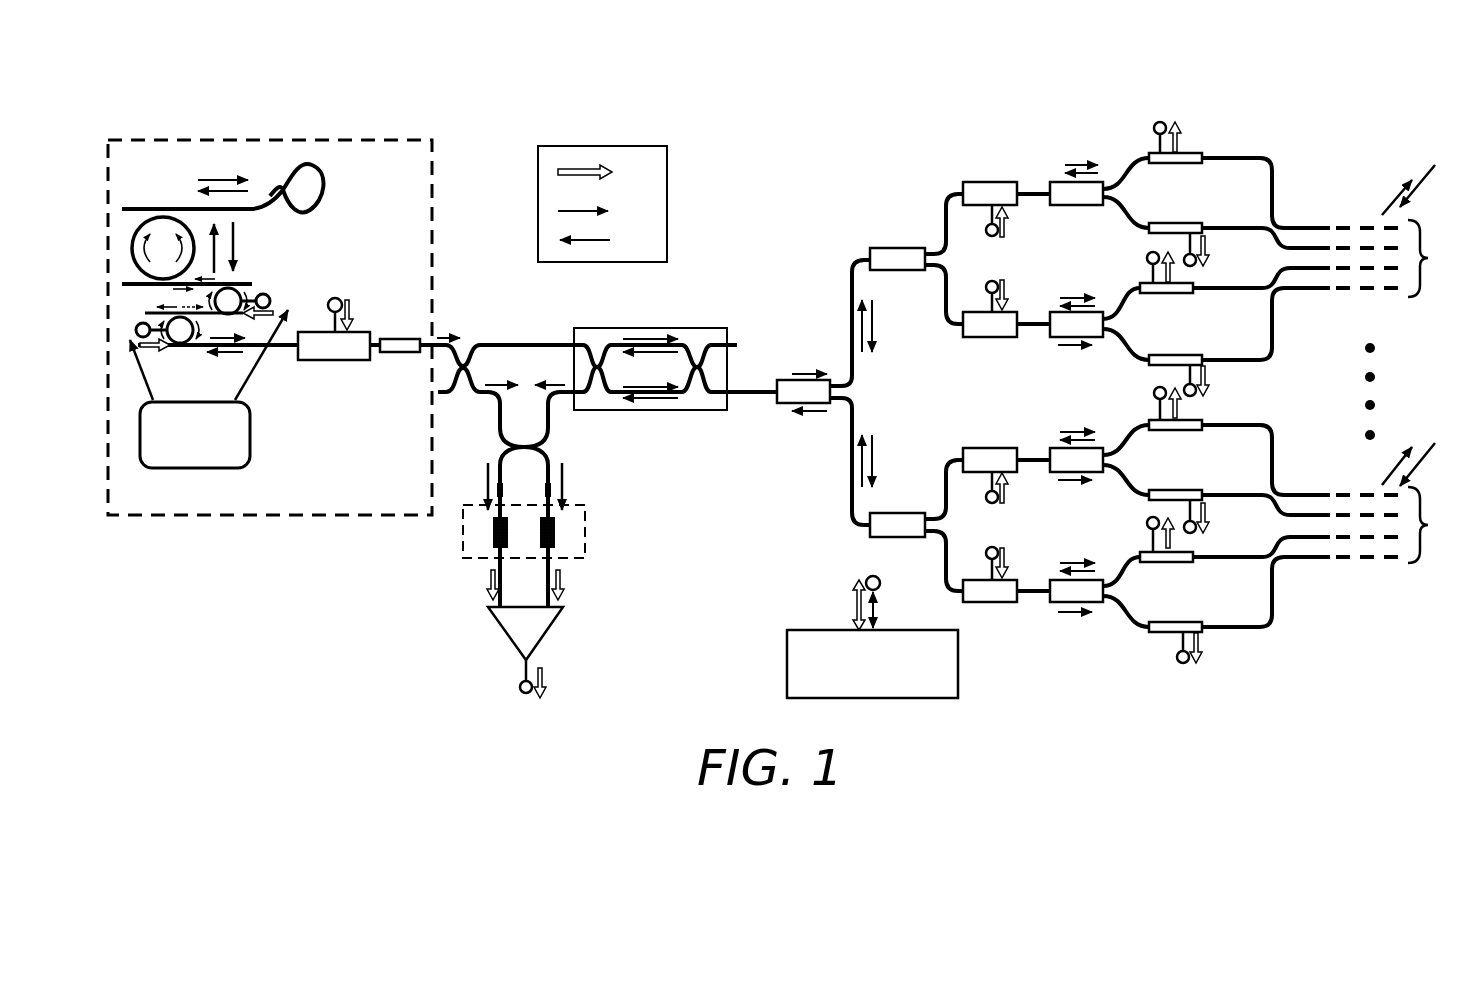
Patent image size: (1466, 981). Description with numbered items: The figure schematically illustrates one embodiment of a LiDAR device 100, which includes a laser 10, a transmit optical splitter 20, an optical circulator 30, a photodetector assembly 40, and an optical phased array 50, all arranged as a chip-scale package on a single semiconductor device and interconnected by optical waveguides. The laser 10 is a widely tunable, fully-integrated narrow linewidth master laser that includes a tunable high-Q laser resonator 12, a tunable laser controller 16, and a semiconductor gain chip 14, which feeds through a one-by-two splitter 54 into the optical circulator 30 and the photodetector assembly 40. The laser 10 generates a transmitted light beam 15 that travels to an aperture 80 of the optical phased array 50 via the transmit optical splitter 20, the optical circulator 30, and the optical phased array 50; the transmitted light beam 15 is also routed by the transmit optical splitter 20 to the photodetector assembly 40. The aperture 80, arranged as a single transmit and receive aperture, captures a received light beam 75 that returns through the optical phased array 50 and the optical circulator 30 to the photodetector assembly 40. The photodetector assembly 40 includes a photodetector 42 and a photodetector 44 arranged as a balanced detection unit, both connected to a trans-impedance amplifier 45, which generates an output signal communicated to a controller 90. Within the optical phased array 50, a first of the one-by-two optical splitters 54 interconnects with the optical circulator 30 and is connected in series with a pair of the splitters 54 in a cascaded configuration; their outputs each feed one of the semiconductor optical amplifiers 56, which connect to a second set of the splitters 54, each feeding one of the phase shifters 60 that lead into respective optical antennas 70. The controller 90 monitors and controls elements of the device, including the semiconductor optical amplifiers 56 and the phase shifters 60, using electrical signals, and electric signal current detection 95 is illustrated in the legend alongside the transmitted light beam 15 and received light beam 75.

The LiDAR device 100 is at (743, 128).
The laser 10 is at (384, 171).
The tunable high-Q laser resonator 12 is at (228, 252).
The semiconductor gain chip 14 is at (338, 360).
The tunable laser controller 16 is at (181, 447).
The transmit optical splitter 20 is at (510, 426).
The optical circulator 30 is at (697, 328).
The photodetector assembly 40 is at (540, 531).
The photodetector 42 is at (493, 535).
The photodetector 44 is at (557, 535).
The trans-impedance amplifier 45 is at (502, 635).
The optical phased array 50 is at (1082, 145).
The 1×2 optical splitter 54 is at (463, 366).
The semiconductor optical amplifier 56 is at (975, 180).
The phase shifter 60 is at (1188, 153).
The optical antenna 70 is at (1433, 272).
The aperture 80 is at (1362, 226).
The controller 90 is at (858, 679).
The electric signal current detection 95 is at (614, 186).
The transmitted light beam 15 is at (614, 225).
The received light beam 75 is at (614, 254).